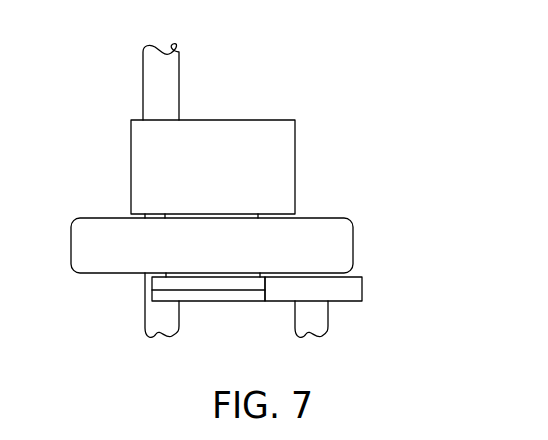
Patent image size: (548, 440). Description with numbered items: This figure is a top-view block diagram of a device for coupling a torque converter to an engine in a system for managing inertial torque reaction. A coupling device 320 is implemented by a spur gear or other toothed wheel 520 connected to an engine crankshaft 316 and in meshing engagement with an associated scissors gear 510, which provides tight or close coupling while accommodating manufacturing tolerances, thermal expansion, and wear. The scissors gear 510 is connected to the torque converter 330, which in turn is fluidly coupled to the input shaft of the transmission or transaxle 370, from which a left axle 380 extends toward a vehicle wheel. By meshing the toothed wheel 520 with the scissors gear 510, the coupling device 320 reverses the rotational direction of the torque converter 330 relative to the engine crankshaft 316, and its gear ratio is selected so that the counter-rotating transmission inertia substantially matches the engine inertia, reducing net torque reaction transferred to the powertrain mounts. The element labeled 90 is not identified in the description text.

The left axle 380 is at (158, 77).
The transmission or transaxle 370 is at (285, 155).
The torque converter 330 is at (342, 242).
The coupling device 320 is at (388, 291).
The scissors gear 510 is at (208, 295).
The toothed wheel 520 is at (343, 293).
The tube 90 is at (155, 310).
The engine crankshaft 316 is at (292, 315).